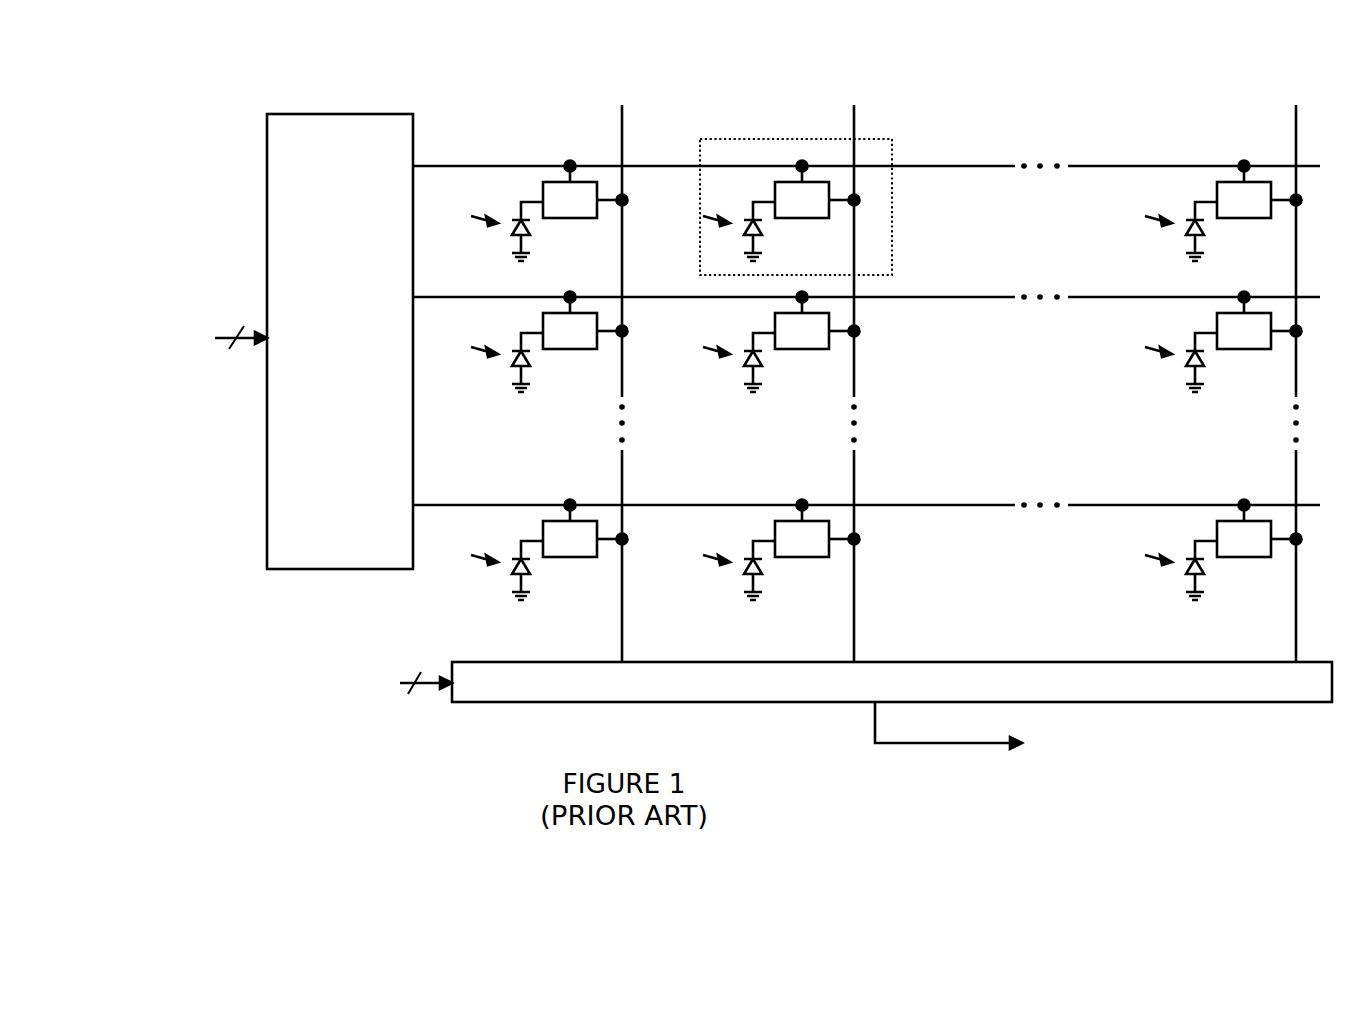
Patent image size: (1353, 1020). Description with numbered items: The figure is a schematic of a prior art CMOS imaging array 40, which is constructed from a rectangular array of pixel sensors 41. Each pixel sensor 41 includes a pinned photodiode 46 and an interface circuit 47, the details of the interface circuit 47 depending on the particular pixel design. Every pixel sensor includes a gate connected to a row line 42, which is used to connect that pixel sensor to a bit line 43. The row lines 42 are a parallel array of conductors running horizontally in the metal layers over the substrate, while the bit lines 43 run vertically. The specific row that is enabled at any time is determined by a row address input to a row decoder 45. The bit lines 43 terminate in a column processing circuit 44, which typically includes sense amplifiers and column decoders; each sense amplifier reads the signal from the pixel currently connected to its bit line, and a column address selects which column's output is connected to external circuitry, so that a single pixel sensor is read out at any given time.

The imaging array 40 is at (193, 105).
The pixel sensor 41 is at (762, 138).
The row line 42 is at (943, 165).
The bit line 43 is at (855, 367).
The column processing circuit 44 is at (1311, 702).
The row decoder 45 is at (351, 113).
The pinned photodiode 46 is at (528, 226).
The interface circuit 47 is at (556, 186).